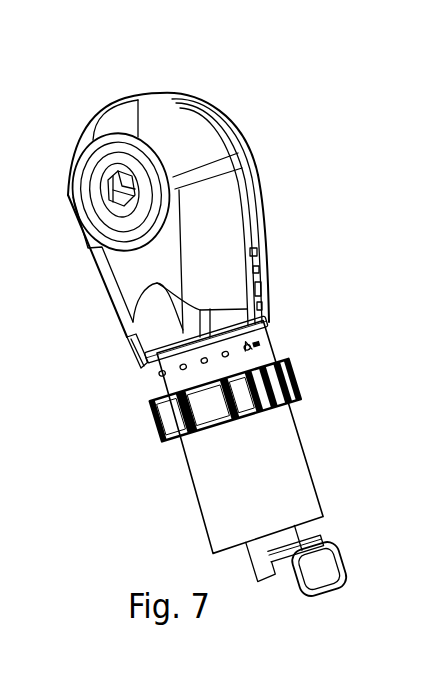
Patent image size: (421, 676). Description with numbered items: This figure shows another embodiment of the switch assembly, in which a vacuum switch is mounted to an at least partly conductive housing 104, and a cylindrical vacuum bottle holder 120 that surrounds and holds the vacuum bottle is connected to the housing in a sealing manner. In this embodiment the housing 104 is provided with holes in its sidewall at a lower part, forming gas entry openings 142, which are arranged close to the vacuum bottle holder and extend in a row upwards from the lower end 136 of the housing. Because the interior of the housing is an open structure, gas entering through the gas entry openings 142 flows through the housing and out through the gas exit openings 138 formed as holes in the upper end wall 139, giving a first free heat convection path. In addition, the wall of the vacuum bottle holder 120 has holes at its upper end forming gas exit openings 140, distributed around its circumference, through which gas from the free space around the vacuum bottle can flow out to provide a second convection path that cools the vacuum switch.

The housing 104 is at (225, 202).
The vacuum bottle holder 120 is at (304, 437).
The lower end 136 is at (278, 292).
The gas exit openings 138 is at (160, 93).
The upper end wall 139 is at (212, 95).
The gas exit openings 140 is at (181, 369).
The gas entry openings 142 is at (266, 284).